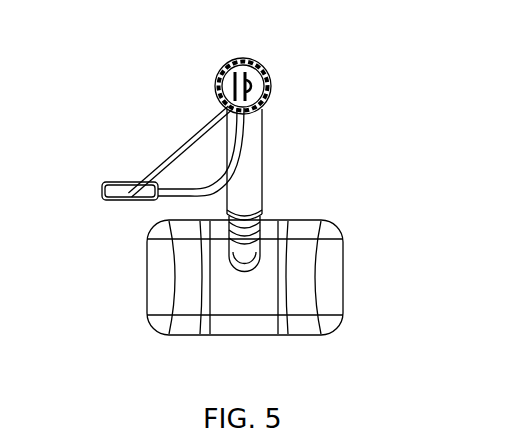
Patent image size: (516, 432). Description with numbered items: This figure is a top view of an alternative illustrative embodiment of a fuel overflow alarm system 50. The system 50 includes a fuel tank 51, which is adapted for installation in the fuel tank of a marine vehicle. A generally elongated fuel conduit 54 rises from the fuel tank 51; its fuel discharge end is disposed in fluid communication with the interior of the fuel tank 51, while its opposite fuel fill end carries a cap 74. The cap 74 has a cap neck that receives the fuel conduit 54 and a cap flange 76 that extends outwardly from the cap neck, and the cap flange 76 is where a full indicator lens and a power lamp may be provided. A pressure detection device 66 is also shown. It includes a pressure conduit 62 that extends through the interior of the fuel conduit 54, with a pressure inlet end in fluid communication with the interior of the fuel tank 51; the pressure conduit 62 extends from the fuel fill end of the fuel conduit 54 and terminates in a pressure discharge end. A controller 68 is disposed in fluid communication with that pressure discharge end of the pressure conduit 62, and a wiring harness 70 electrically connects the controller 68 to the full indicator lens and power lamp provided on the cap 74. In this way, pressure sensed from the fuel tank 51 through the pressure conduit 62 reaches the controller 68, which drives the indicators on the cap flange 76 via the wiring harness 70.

The fuel overflow alarm system 50 is at (162, 76).
The fuel tank 51 is at (240, 305).
The fuel conduit 54 is at (247, 190).
The pressure conduit 62 is at (245, 150).
The pressure detection device 66 is at (82, 168).
The controller 68 is at (130, 203).
The wiring harness 70 is at (176, 150).
The cap 74 is at (271, 80).
The cap flange 76 is at (240, 58).